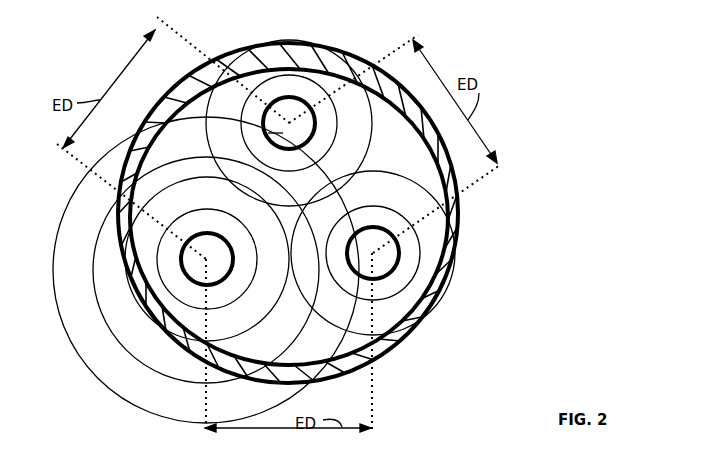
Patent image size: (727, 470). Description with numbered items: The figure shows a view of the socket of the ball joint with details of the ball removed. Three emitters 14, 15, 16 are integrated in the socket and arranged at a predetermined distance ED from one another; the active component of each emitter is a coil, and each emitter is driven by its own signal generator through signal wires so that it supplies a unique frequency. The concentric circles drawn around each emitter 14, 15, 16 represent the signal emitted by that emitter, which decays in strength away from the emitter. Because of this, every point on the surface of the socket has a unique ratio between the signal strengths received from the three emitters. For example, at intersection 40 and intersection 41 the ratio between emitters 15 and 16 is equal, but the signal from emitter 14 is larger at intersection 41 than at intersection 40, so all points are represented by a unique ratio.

The emitter 14 is at (120, 335).
The emitter 15 is at (152, 110).
The emitter 16 is at (410, 333).
The intersection 40 is at (448, 203).
The intersection 41 is at (452, 245).